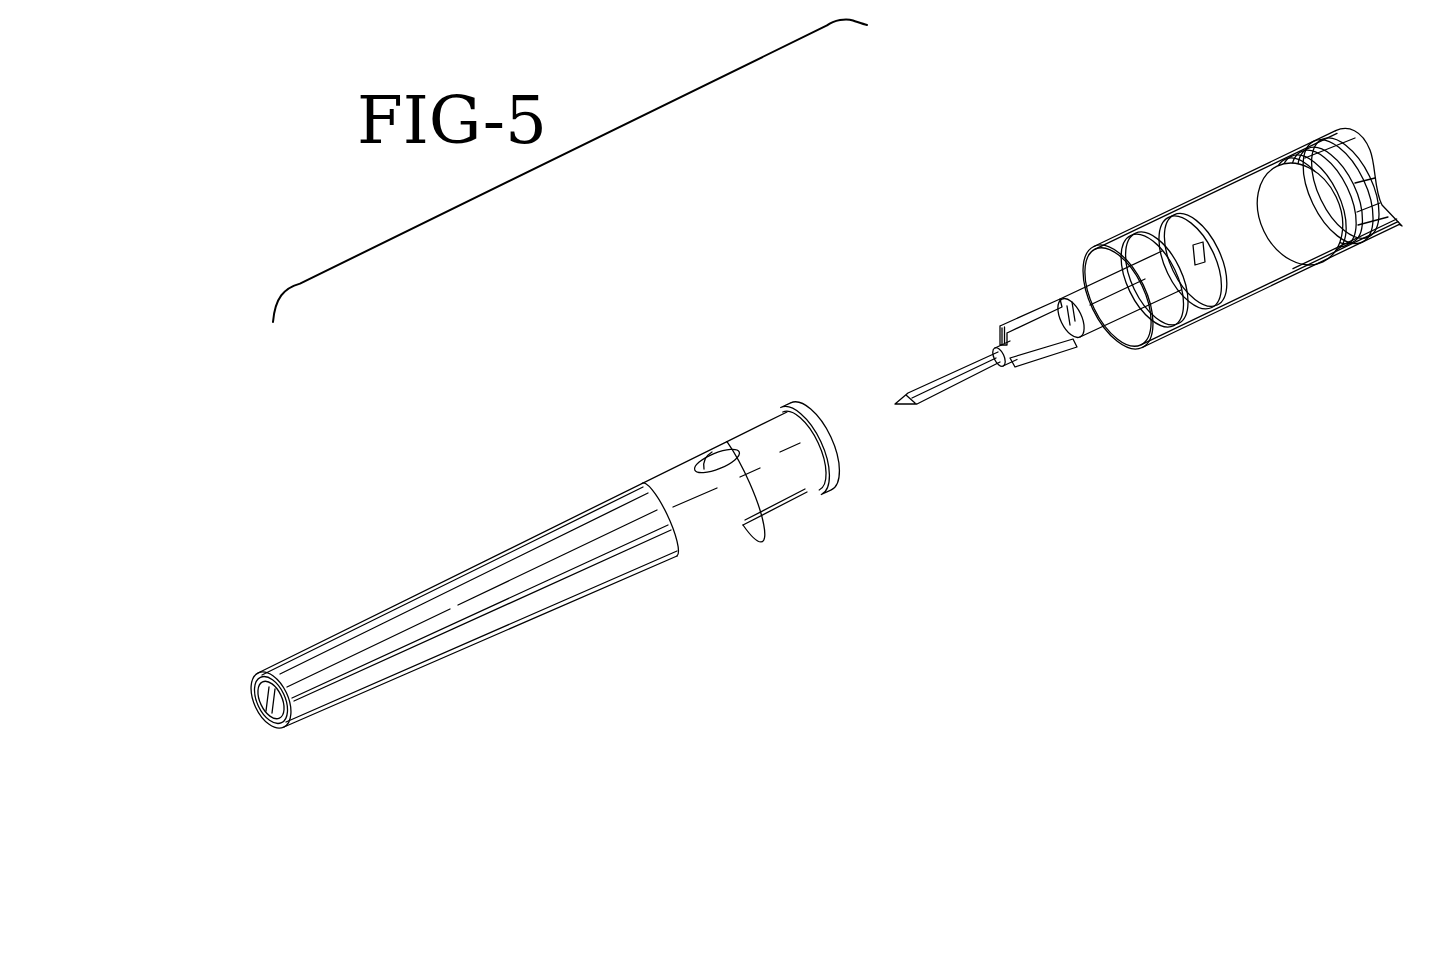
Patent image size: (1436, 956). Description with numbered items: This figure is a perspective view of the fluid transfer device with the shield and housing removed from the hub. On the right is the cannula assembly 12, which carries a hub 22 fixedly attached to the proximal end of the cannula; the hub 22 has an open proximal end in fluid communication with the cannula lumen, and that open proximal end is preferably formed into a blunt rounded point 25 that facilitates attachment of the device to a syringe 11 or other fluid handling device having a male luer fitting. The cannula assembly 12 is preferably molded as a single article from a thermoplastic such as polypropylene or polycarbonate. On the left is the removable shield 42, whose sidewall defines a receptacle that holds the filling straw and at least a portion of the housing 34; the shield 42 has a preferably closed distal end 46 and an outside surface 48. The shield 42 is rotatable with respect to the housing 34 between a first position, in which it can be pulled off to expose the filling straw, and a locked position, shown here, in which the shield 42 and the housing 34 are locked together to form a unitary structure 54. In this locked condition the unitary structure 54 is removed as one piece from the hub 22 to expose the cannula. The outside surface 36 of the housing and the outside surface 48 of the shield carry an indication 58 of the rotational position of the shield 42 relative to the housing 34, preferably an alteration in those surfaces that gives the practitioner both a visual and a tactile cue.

The syringe 11 is at (1232, 182).
The hub 22 is at (1079, 280).
The blunt rounded point 25 is at (895, 400).
The cannula assembly 12 is at (1005, 365).
The removable shield 42 is at (500, 633).
The closed distal end 46 is at (262, 728).
The outside surface 48 is at (670, 483).
The indication 58 is at (704, 465).
The housing 34 is at (785, 493).
The unitary structure 54 is at (757, 518).
The outside surface 36 is at (757, 432).